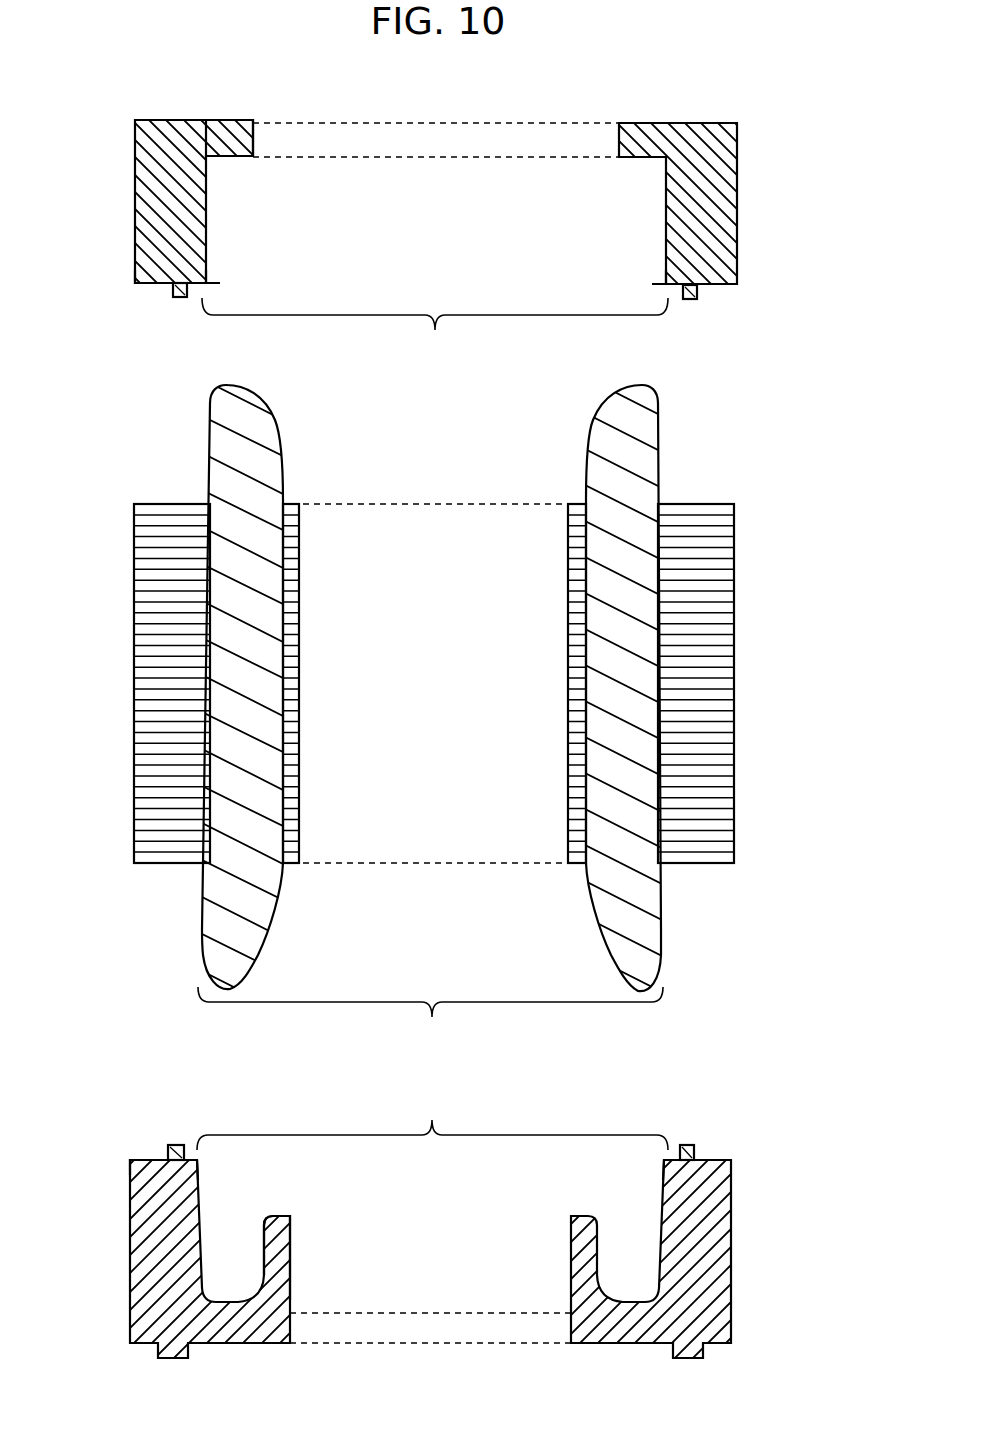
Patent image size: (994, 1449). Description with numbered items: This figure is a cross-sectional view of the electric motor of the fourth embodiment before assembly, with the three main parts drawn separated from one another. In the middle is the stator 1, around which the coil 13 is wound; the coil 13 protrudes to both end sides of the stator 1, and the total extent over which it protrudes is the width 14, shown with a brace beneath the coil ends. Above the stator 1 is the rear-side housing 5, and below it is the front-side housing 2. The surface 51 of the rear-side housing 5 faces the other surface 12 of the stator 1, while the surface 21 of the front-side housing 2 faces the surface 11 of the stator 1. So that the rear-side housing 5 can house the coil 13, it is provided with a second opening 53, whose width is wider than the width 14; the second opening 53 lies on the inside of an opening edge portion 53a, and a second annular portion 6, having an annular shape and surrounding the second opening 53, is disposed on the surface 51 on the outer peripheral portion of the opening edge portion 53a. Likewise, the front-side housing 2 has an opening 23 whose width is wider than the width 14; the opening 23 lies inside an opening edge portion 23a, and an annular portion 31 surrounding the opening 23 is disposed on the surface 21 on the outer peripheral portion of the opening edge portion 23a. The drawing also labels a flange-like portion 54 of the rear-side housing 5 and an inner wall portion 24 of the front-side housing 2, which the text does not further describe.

The stator 1 is at (133, 662).
The surface of the stator 11 is at (140, 866).
The other surface of the stator 12 is at (146, 503).
The coil 13 is at (218, 450).
The width over which the coil is extended 14 is at (430, 1019).
The front-side housing 2 is at (130, 1240).
The surface of the front-side housing 21 is at (130, 1160).
The opening 23 is at (432, 1119).
The opening edge portion 23a is at (197, 1160).
The inner wall 24 is at (292, 1257).
The annular portion 31 is at (180, 1145).
The rear-side housing 5 is at (135, 208).
The surface of the rear-side housing 51 is at (141, 286).
The second opening 53 is at (435, 333).
The opening edge portion 53a is at (206, 284).
The cover flange 54 is at (253, 125).
The second annular portion 6 is at (180, 299).